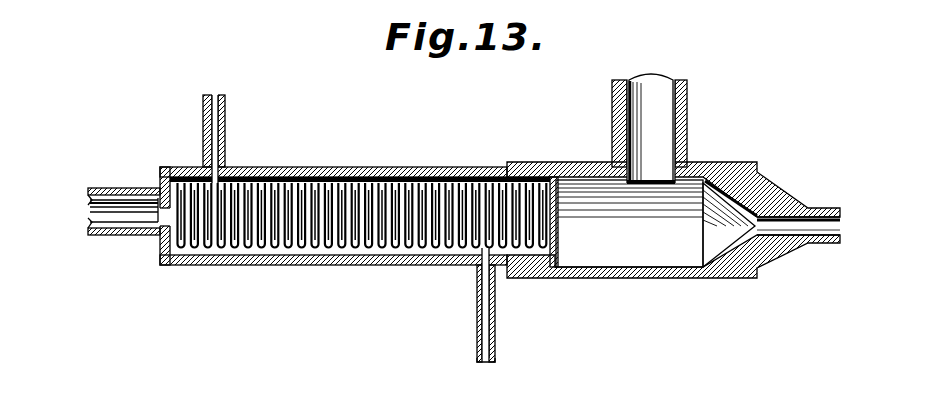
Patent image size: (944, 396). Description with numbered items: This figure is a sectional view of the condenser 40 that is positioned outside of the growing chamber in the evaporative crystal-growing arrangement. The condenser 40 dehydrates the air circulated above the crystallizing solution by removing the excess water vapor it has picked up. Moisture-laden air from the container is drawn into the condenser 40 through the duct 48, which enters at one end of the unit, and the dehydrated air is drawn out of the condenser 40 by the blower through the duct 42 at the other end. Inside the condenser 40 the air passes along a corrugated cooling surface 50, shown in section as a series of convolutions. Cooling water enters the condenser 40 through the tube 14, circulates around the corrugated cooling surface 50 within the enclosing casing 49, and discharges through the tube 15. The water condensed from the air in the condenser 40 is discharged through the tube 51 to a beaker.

The tube 14 is at (225, 112).
The tube 15 is at (495, 300).
The condenser 40 is at (630, 279).
The duct 42 is at (688, 115).
The duct 48 is at (117, 188).
The housing 49 is at (265, 266).
The corrugated cooling surface 50 is at (362, 250).
The tube 51 is at (825, 245).